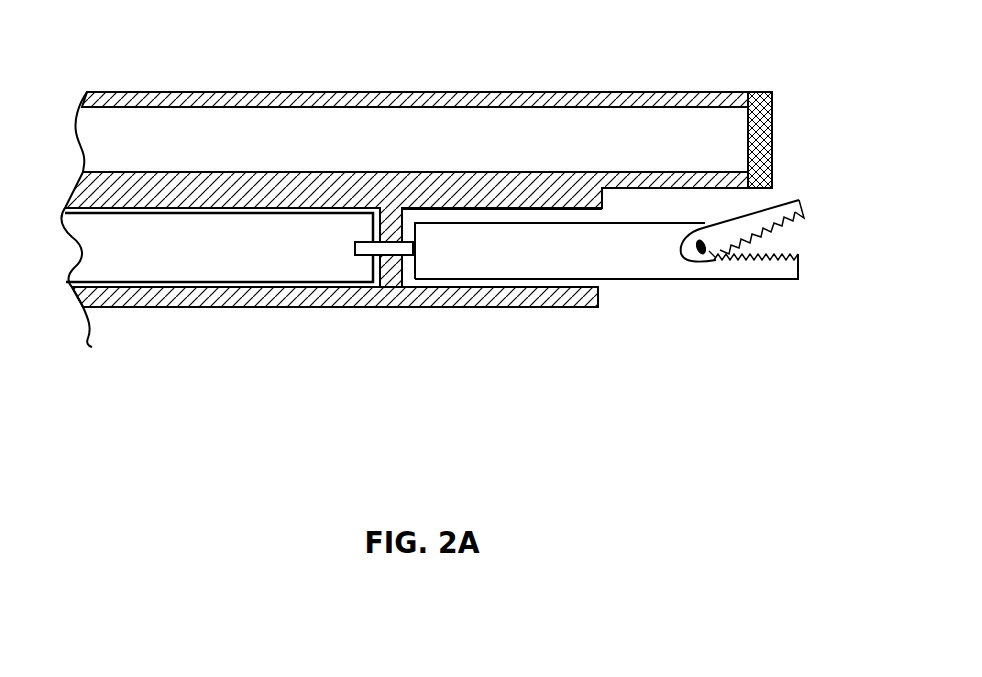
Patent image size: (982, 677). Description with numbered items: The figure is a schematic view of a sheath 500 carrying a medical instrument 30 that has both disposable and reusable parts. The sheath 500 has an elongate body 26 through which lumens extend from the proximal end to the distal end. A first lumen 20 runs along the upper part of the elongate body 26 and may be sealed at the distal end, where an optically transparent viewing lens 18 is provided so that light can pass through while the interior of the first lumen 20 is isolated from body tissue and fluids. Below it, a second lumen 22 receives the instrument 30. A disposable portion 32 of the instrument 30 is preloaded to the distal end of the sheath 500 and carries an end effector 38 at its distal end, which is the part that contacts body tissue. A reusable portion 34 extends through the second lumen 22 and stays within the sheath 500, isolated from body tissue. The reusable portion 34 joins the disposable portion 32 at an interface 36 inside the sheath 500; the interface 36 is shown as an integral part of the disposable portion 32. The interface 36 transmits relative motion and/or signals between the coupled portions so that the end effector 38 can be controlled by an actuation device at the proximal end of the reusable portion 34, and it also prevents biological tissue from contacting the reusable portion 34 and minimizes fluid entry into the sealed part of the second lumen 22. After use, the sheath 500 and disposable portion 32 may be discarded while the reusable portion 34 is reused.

The sheath 500 is at (337, 62).
The elongate body 26 is at (180, 100).
The first lumen 20 is at (653, 133).
The viewing lens 18 is at (772, 137).
The second lumen 22 is at (66, 293).
The reusable portion 34 is at (251, 258).
The interface 36 is at (392, 264).
The instrument 30 is at (647, 295).
The disposable portion 32 is at (662, 252).
The end effector 38 is at (804, 196).